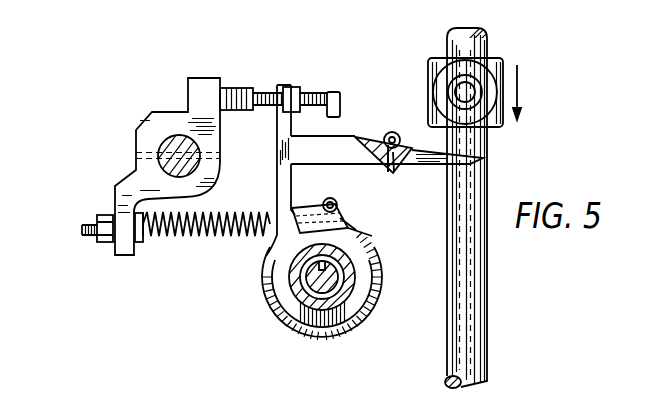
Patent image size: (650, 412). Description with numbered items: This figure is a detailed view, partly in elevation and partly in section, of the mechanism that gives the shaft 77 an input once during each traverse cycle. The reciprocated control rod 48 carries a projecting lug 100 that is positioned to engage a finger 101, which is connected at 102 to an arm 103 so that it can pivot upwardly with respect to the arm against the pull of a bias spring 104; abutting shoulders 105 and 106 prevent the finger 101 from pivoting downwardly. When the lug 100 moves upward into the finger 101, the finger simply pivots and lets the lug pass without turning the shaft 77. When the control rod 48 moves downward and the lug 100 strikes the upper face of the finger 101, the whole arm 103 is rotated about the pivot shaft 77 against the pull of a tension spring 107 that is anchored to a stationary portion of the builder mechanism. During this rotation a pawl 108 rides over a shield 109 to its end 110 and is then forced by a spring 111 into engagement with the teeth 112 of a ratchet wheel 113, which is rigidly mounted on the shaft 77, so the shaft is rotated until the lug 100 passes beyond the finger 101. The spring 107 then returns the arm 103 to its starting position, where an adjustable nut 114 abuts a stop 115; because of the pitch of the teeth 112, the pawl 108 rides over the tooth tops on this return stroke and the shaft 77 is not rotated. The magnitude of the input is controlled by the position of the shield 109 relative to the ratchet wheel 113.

The control rod 48 is at (456, 351).
The shaft 77 is at (286, 313).
The projecting lug 100 is at (508, 55).
The finger 101 is at (477, 157).
The connection 102 is at (395, 133).
The arm 103 is at (288, 172).
The bias spring 104 is at (387, 136).
The shoulder 105 is at (388, 171).
The shoulder 106 is at (398, 171).
The tension spring 107 is at (221, 232).
The pawl 108 is at (341, 213).
The shield 109 is at (352, 228).
The end of shield 110 is at (366, 233).
The spring 111 is at (329, 201).
The teeth 112 is at (274, 300).
The ratchet wheel 113 is at (308, 326).
The adjustable nut 114 is at (281, 80).
The stop 115 is at (241, 88).